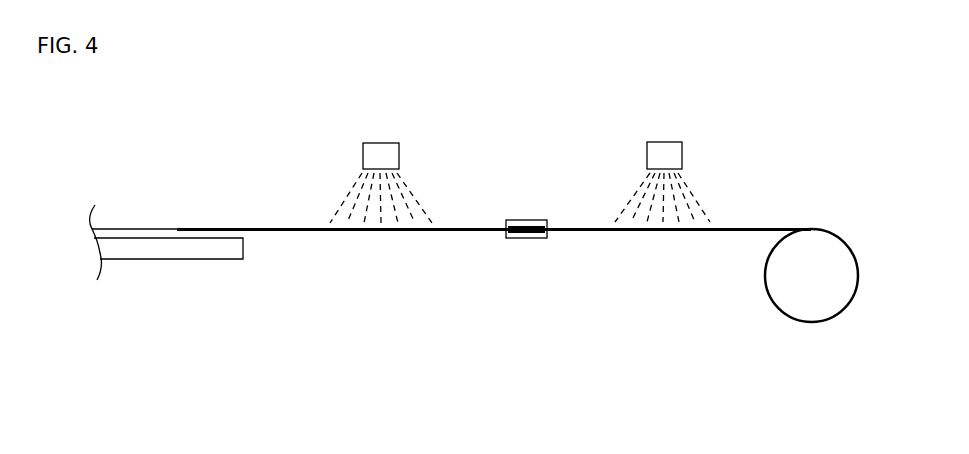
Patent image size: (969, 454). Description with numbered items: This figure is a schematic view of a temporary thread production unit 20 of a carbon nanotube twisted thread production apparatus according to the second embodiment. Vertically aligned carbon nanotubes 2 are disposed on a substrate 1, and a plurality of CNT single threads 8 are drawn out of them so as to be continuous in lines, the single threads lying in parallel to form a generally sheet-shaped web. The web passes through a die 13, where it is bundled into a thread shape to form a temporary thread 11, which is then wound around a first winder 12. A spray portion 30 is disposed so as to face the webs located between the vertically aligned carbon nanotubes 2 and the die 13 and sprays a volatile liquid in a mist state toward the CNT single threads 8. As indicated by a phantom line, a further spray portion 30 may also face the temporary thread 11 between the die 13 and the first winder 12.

The substrate 1 is at (133, 252).
The vertically aligned carbon nanotubes 2 is at (137, 228).
The CNT single threads 8 is at (383, 233).
The temporary thread 11 is at (583, 237).
The first winder 12 is at (803, 300).
The die 13 is at (525, 220).
The temporary thread production unit 20 is at (428, 386).
The spray portion 30 is at (382, 148).